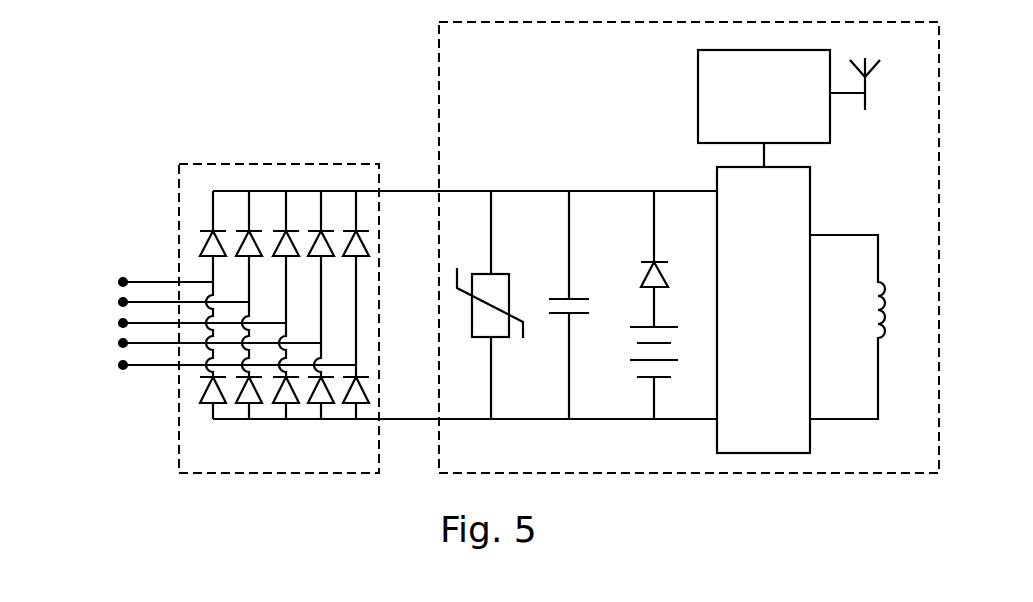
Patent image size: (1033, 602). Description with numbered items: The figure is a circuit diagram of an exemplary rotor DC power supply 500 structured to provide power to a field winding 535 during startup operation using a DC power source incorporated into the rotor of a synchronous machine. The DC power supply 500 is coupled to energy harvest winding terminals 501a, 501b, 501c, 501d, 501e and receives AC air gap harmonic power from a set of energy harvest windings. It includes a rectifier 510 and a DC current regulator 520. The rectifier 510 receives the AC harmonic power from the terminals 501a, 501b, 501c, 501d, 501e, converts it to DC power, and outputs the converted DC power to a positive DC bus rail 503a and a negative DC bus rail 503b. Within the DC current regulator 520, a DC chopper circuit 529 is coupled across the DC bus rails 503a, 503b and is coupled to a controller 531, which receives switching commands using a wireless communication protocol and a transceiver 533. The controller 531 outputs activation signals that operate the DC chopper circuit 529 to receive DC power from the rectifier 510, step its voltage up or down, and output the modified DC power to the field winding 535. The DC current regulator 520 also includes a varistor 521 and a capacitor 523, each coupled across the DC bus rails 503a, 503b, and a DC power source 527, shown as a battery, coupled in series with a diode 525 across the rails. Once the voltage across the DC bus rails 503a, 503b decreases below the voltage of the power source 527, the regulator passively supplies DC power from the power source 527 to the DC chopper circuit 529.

The DC power supply 500 is at (270, 80).
The rectifier 510 is at (218, 163).
The energy harvest winding terminal 501a is at (119, 282).
The energy harvest winding terminal 501b is at (119, 302).
The energy harvest winding terminal 501c is at (119, 323).
The energy harvest winding terminal 501d is at (119, 343).
The energy harvest winding terminal 501e is at (119, 365).
The positive DC bus rail 503a is at (411, 190).
The negative DC bus rail 503b is at (418, 421).
The DC current regulator 520 is at (438, 58).
The varistor 521 is at (483, 273).
The capacitor 523 is at (560, 298).
The diode 525 is at (650, 261).
The DC power source 527 is at (640, 326).
The DC chopper circuit 529 is at (810, 182).
The controller 531 is at (698, 62).
The transceiver 533 is at (868, 93).
The field winding 535 is at (878, 332).